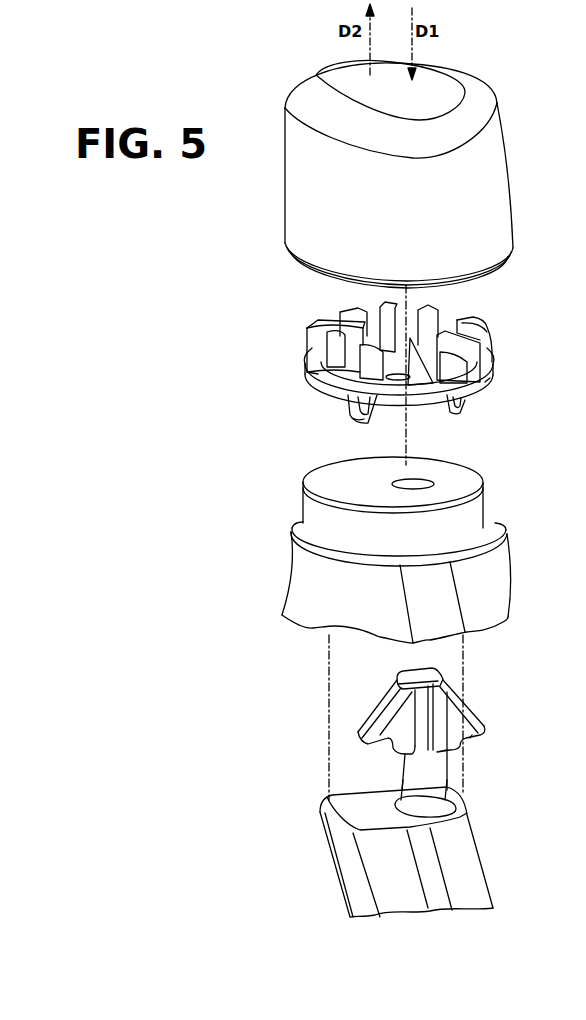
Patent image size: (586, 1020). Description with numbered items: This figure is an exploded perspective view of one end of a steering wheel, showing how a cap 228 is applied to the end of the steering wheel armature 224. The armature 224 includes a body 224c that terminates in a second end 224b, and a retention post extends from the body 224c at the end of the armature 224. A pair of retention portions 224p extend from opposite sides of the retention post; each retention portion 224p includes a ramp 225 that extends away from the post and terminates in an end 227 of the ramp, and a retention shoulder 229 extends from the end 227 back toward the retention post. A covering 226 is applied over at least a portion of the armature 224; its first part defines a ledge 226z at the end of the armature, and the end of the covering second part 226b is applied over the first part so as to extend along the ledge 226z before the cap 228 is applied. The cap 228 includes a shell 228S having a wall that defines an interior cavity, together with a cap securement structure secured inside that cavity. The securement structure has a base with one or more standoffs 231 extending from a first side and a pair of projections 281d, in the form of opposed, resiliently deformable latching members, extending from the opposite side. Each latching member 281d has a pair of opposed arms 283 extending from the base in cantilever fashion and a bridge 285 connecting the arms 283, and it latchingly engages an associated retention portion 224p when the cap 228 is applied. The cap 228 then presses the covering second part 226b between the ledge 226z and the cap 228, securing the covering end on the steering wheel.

The cap 228 is at (373, 225).
The shell 228S is at (440, 95).
The standoff 231 is at (468, 322).
The retention shoulder 229 is at (490, 378).
The projection 281d is at (336, 400).
The arm 283 is at (375, 421).
The bridge 285 is at (365, 425).
The covering 226 is at (346, 548).
The ledge 226z is at (298, 523).
The second part of covering 226b is at (305, 563).
The ramp 225 is at (405, 729).
The retention portion 224p is at (455, 722).
The end of ramp 227 is at (485, 727).
The armature 224 is at (381, 853).
The second end of body 224b is at (463, 858).
The body of armature 224c is at (347, 880).